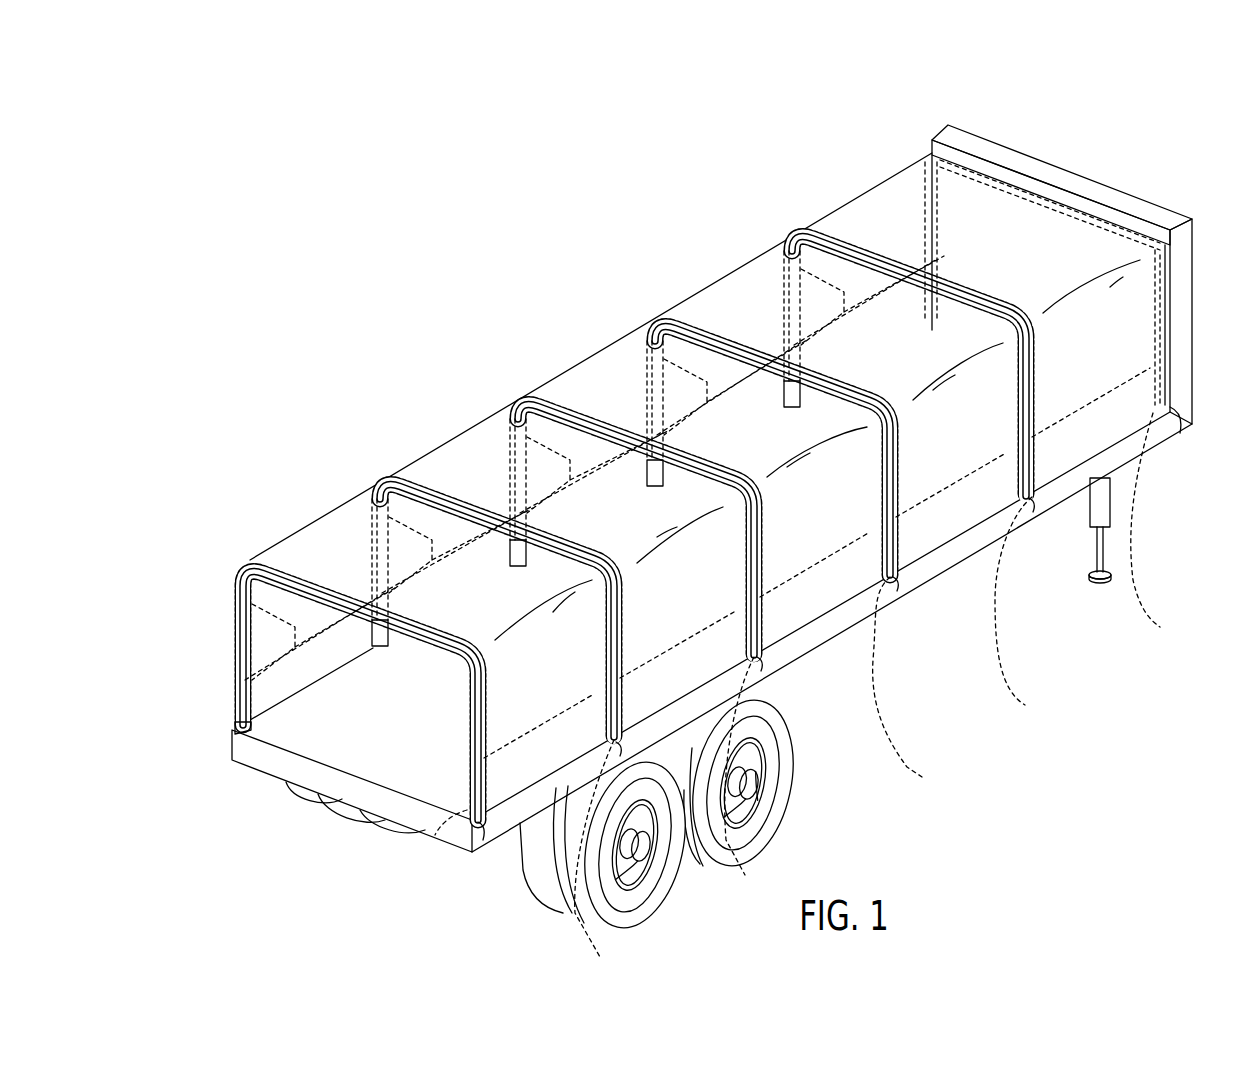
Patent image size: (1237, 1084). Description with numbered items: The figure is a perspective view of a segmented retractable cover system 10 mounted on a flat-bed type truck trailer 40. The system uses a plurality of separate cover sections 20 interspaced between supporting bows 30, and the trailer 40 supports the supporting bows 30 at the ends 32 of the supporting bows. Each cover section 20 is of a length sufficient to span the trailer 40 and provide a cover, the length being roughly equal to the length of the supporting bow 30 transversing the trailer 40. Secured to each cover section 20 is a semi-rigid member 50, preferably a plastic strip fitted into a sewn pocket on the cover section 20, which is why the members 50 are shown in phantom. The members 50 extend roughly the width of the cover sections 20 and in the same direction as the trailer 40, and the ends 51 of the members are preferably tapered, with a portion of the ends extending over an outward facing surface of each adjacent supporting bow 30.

The segmented retractable cover system 10 is at (404, 390).
The cover sections 20 is at (880, 232).
The supporting bows 30 is at (838, 663).
The ends of the supporting bows 32 is at (1187, 506).
The flat-bed type truck trailer 40 is at (987, 752).
The semi-rigid member 50 is at (784, 258).
The ends of the members 51 is at (427, 873).